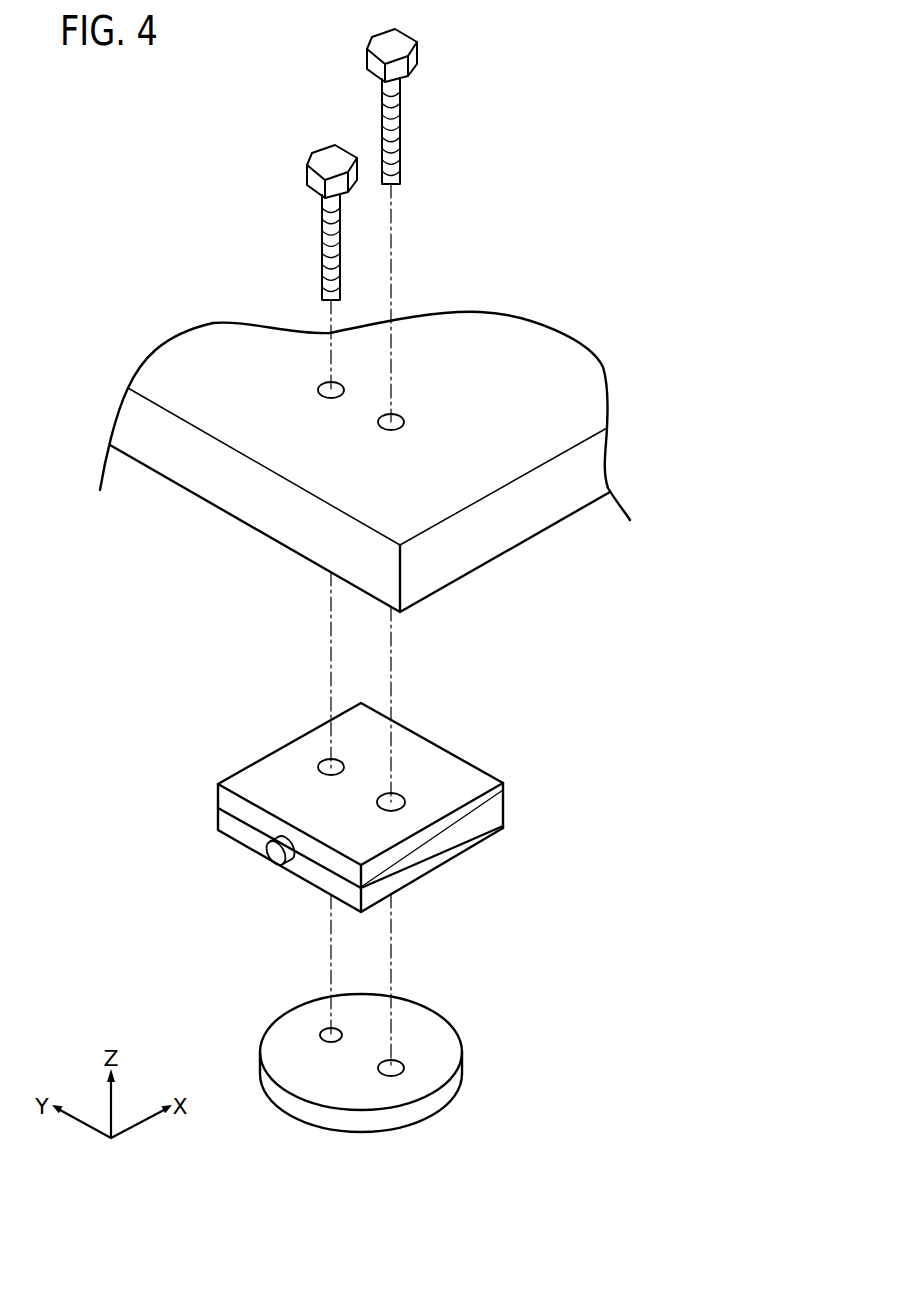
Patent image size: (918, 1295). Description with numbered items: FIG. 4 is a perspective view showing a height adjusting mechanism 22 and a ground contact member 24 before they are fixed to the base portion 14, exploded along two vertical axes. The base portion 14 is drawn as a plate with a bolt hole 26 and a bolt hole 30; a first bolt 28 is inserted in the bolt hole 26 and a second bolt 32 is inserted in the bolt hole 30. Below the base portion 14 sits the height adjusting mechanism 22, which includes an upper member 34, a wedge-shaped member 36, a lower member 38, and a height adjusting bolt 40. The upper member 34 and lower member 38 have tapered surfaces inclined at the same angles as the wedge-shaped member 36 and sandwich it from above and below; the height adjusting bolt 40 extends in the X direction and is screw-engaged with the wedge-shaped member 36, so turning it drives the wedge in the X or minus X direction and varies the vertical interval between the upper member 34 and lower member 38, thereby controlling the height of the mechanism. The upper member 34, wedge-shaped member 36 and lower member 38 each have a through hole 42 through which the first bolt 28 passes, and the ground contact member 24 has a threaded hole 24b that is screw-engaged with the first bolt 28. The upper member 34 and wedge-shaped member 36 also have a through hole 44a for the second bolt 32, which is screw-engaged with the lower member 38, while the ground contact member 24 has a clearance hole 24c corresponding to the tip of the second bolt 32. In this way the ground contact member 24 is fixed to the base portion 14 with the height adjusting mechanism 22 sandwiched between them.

The base portion 14 is at (365, 462).
The height adjusting mechanism 22 is at (409, 803).
The ground contact member 24 is at (350, 1080).
The threaded hole 24b is at (325, 1032).
The clearance hole 24c is at (392, 1076).
The bolt hole 26 is at (317, 388).
The first bolt 28 is at (322, 162).
The bolt hole 30 is at (403, 420).
The second bolt 32 is at (413, 53).
The upper member 34 is at (367, 791).
The wedge-shaped member 36 is at (493, 808).
The lower member 38 is at (438, 862).
The height adjusting bolt 40 is at (275, 857).
The through hole 42 is at (325, 765).
The through hole 44a is at (395, 798).